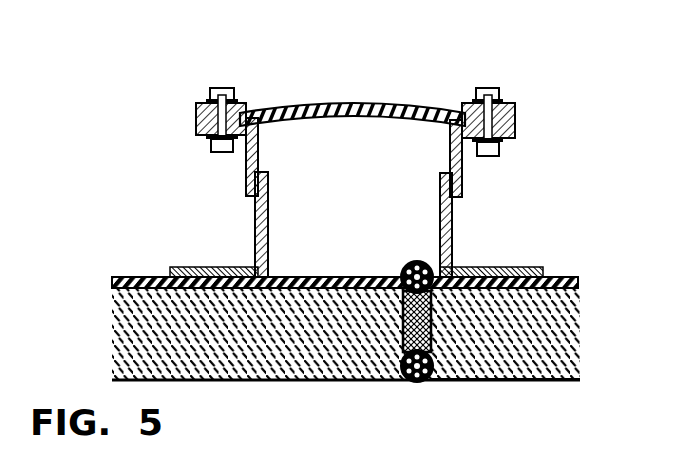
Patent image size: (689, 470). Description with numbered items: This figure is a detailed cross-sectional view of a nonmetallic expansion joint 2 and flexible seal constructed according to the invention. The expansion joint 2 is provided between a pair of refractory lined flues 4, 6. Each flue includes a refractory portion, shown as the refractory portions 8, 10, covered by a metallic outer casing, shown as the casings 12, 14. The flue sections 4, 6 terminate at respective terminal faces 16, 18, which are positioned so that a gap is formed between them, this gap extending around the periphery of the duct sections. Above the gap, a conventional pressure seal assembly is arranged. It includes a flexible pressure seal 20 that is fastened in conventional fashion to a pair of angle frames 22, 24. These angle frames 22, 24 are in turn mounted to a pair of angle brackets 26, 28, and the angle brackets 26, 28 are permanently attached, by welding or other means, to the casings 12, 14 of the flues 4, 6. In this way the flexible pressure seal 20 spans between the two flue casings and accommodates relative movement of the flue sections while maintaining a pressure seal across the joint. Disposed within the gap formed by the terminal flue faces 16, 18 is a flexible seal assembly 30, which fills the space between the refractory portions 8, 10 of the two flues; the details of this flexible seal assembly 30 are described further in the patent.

The nonmetallic expansion joint 2 is at (356, 152).
The refractory lined flue 4 is at (96, 270).
The refractory lined flue 6 is at (586, 261).
The refractory portion 8 is at (292, 382).
The refractory portion 10 is at (510, 382).
The metallic outer casing 12 is at (114, 281).
The metallic outer casing 14 is at (578, 283).
The terminal face 16 is at (407, 384).
The terminal face 18 is at (428, 384).
The flexible pressure seal 20 is at (365, 104).
The angle frame 22 is at (262, 149).
The angle frame 24 is at (462, 178).
The angle bracket 26 is at (270, 222).
The angle bracket 28 is at (453, 238).
The flexible seal assembly 30 is at (416, 357).